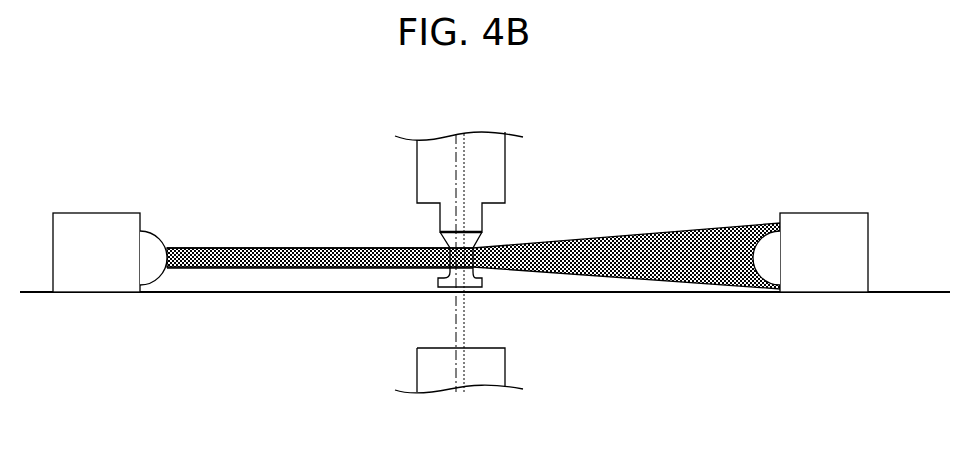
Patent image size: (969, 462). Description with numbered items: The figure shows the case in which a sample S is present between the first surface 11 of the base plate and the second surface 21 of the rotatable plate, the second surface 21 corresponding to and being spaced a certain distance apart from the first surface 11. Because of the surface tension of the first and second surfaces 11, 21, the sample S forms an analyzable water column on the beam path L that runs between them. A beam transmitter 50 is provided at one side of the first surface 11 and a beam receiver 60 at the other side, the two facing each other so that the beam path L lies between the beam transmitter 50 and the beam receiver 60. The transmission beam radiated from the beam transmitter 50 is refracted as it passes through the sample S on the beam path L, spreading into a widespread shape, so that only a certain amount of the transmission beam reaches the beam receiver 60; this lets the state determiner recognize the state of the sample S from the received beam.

The beam transmitter 50 is at (158, 240).
The beam receiver 60 is at (768, 243).
The second surface 21 is at (433, 220).
The sample S is at (438, 240).
The beam path L is at (483, 243).
The first surface 11 is at (447, 293).